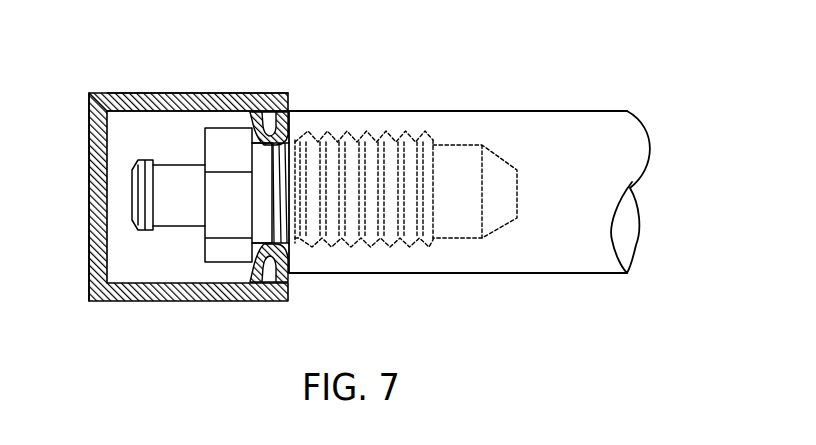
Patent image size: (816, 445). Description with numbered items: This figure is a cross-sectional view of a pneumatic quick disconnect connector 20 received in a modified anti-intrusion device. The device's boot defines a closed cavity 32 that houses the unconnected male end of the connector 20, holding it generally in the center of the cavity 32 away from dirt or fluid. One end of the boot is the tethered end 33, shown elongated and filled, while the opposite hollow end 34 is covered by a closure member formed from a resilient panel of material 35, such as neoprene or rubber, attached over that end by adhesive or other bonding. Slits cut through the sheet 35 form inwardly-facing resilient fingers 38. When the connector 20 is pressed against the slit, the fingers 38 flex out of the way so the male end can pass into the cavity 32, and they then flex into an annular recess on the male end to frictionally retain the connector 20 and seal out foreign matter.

The quick disconnect connector 20 is at (175, 160).
The cavity 32 is at (184, 180).
The tethered end 33 is at (108, 92).
The hollow end 34 is at (223, 93).
The panel of material 35 is at (290, 98).
The fingers 38 is at (267, 113).